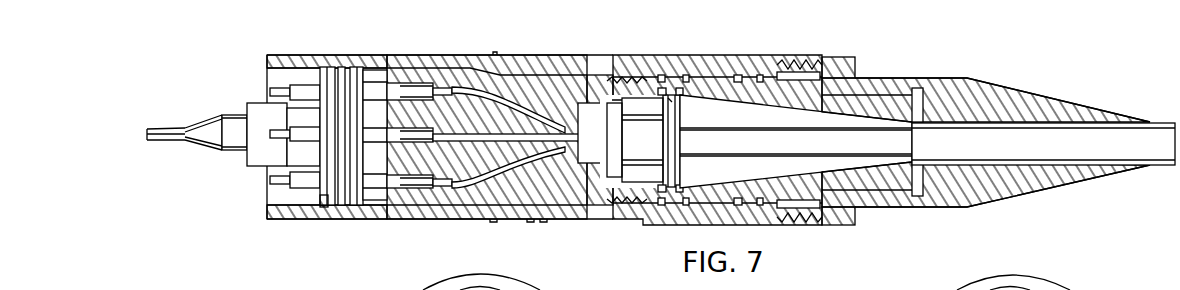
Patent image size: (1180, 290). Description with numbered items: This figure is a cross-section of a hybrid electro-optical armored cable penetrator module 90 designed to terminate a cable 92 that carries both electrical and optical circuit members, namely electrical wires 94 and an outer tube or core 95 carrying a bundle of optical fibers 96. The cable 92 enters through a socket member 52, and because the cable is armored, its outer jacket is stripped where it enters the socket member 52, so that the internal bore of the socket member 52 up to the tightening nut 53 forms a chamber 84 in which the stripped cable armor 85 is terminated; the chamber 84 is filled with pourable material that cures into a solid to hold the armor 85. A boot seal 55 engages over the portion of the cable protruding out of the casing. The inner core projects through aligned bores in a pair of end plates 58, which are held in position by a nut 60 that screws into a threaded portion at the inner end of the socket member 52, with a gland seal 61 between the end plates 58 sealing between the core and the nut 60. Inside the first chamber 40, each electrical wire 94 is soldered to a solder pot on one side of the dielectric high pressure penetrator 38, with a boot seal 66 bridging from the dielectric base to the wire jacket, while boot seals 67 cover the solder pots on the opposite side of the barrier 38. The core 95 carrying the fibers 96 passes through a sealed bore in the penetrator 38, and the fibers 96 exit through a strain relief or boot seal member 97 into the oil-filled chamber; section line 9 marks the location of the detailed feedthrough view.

The section line 9 is at (1091, 274).
The high pressure penetrator 38 is at (327, 207).
The first chamber 40 is at (440, 193).
The socket member 52 is at (763, 72).
The tightening nut 53 is at (833, 64).
The boot seal 55 is at (1012, 105).
The end plates 58 is at (668, 105).
The nut 60 is at (593, 193).
The gland seal 61 is at (637, 163).
The boot seal 66 is at (420, 190).
The boot seals 67 is at (272, 181).
The chamber 84 is at (788, 163).
The cable armor 85 is at (845, 165).
The hybrid electro-optical armored cable penetrator module 90 is at (930, 68).
The cable 92 is at (1112, 138).
The electrical wires 94 is at (533, 153).
The outer tube or core 95 is at (505, 137).
The optical fibers 96 is at (163, 130).
The strain relief or boot seal member 97 is at (228, 115).